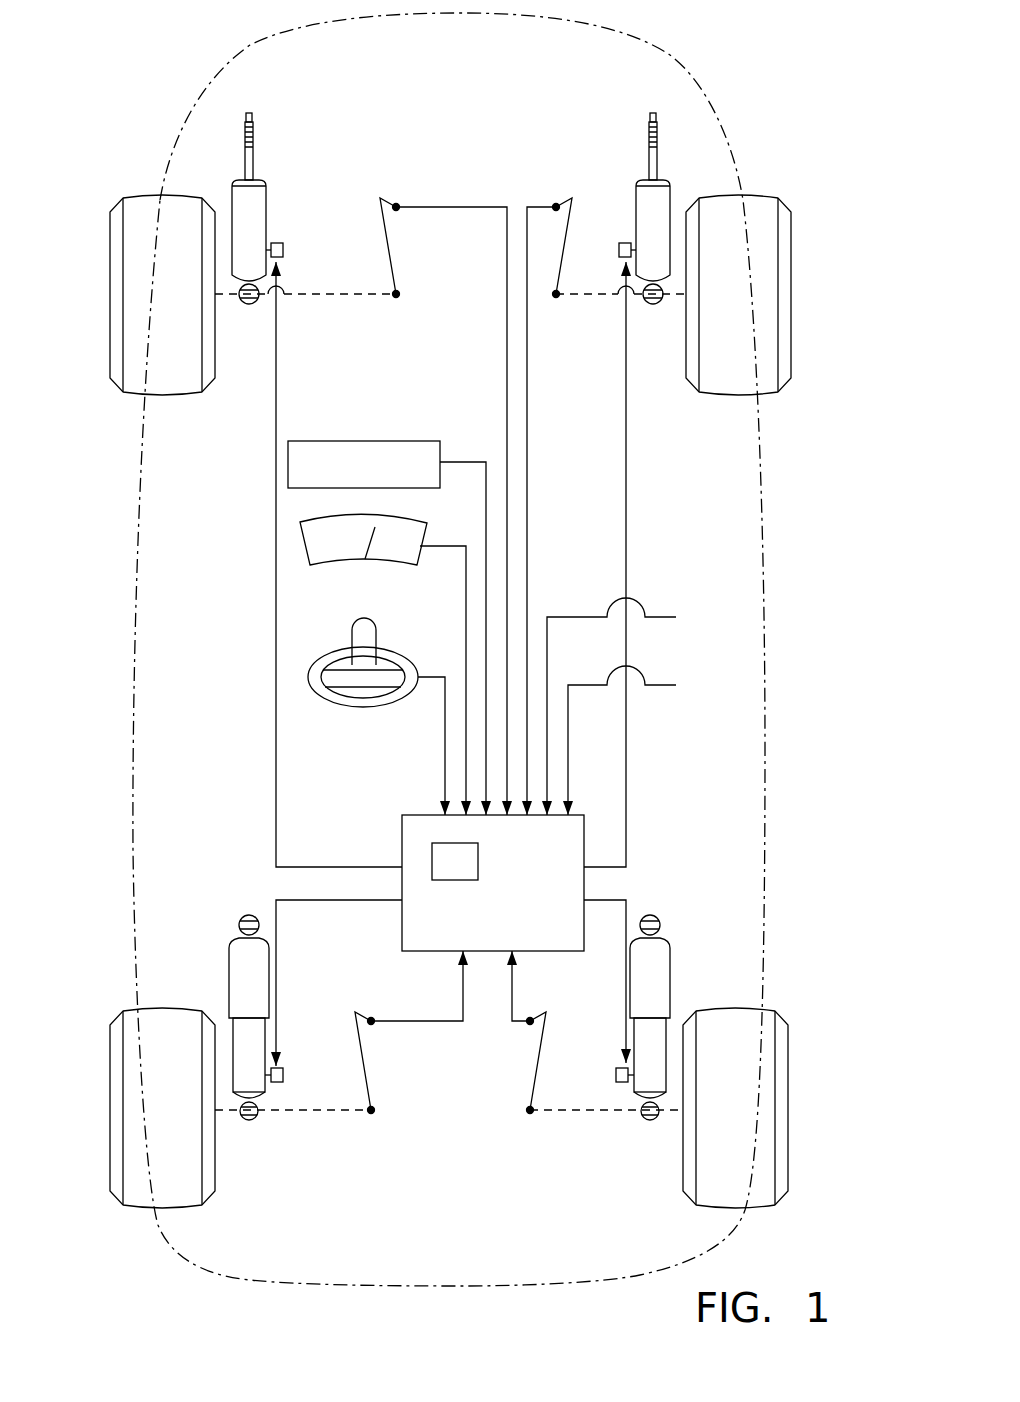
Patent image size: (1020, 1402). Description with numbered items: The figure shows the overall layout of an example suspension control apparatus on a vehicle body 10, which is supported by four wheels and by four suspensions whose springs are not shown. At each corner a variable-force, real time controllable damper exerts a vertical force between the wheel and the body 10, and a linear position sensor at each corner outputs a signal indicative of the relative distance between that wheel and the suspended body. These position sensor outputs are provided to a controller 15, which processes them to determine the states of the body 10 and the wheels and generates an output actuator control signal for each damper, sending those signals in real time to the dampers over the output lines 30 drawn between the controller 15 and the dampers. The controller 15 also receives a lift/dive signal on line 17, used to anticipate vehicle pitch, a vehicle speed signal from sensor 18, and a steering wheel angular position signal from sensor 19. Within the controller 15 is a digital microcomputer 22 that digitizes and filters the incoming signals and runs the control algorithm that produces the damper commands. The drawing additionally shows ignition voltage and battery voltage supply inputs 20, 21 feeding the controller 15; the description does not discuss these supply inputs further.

The vehicle body 10 is at (690, 64).
The controller 15 is at (573, 848).
The lift/dive signal line 17 is at (392, 442).
The vehicle speed sensor 18 is at (323, 525).
The steering wheel angular position sensor 19 is at (327, 660).
The ignition voltage input 20 is at (655, 617).
The battery voltage input 21 is at (655, 687).
The digital microcomputer 22 is at (432, 862).
The damper control lines 30 is at (622, 898).